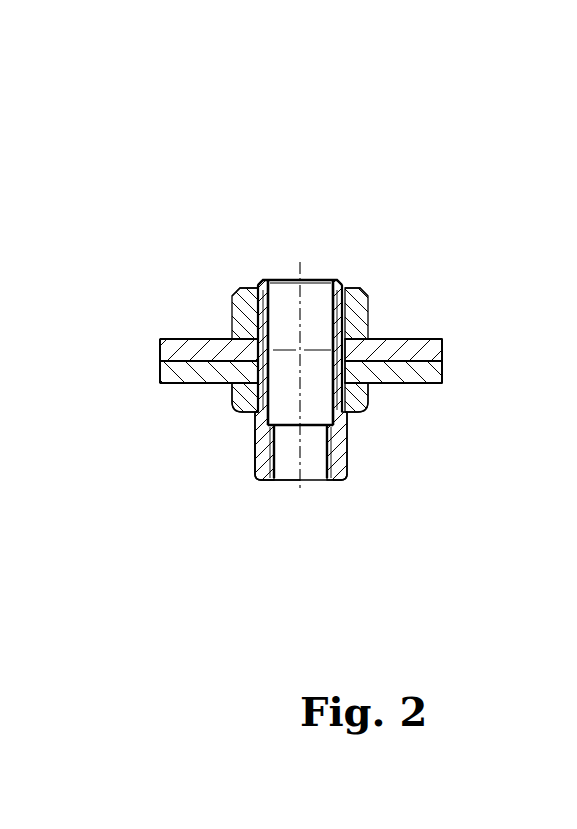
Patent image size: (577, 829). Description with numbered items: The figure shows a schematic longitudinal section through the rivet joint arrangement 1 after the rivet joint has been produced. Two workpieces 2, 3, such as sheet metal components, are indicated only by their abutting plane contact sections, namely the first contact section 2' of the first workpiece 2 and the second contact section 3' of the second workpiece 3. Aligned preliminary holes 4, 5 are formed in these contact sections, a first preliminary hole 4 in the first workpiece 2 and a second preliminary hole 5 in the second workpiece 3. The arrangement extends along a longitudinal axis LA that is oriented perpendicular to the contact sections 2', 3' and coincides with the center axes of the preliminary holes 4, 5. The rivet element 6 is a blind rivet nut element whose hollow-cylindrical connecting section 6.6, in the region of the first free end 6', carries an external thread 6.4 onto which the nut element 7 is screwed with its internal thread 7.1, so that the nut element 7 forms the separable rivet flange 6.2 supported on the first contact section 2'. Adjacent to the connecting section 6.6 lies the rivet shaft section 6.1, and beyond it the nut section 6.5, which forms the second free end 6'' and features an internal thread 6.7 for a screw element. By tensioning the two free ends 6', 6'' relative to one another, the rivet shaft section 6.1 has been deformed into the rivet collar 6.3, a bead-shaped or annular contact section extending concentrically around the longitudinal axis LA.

The rivet joint arrangement 1 is at (402, 170).
The first workpiece 2 is at (425, 335).
The first contact section 2' is at (427, 293).
The second workpiece 3 is at (424, 415).
The second contact section 3' is at (431, 441).
The first preliminary hole 4 is at (252, 348).
The second preliminary hole 5 is at (250, 382).
The rivet element 6 is at (341, 415).
The first free end 6' is at (258, 212).
The second free end 6'' is at (246, 515).
The rivet shaft section 6.1 is at (240, 422).
The rivet flange 6.2 is at (218, 287).
The rivet collar 6.3 is at (360, 407).
The external thread 6.4 is at (262, 289).
The nut section 6.5 is at (342, 479).
The hollow-cylindrical connecting section 6.6 is at (344, 287).
The internal thread 6.7 is at (327, 478).
The nut element 7 is at (369, 303).
The internal thread 7.1 is at (354, 290).
The longitudinal axis LA is at (302, 404).